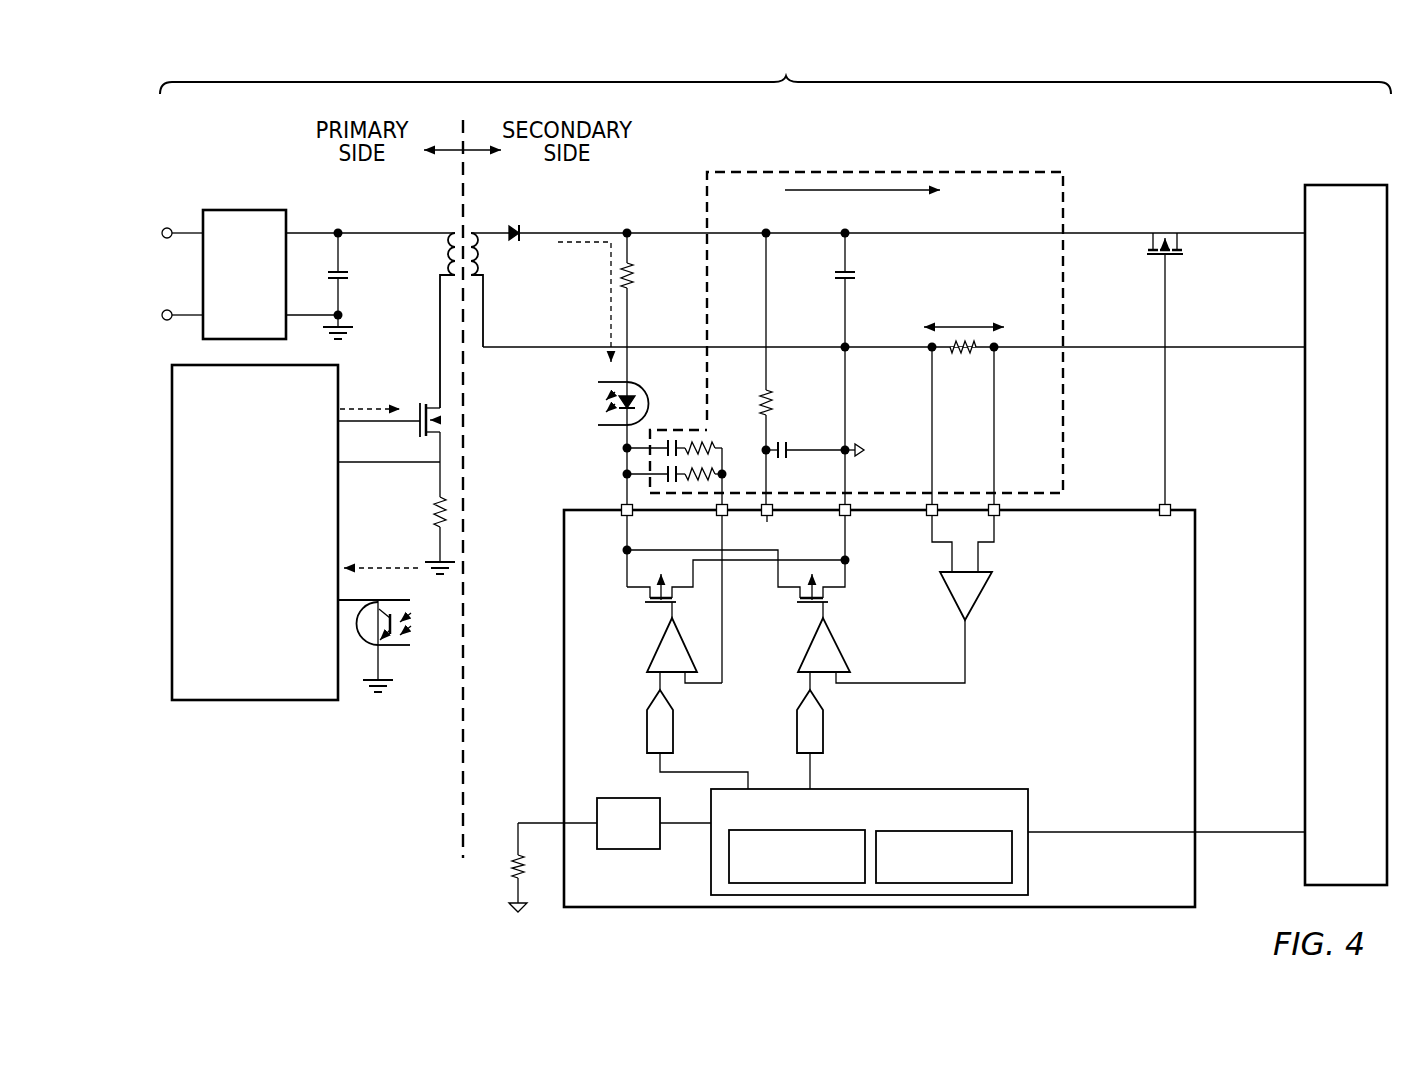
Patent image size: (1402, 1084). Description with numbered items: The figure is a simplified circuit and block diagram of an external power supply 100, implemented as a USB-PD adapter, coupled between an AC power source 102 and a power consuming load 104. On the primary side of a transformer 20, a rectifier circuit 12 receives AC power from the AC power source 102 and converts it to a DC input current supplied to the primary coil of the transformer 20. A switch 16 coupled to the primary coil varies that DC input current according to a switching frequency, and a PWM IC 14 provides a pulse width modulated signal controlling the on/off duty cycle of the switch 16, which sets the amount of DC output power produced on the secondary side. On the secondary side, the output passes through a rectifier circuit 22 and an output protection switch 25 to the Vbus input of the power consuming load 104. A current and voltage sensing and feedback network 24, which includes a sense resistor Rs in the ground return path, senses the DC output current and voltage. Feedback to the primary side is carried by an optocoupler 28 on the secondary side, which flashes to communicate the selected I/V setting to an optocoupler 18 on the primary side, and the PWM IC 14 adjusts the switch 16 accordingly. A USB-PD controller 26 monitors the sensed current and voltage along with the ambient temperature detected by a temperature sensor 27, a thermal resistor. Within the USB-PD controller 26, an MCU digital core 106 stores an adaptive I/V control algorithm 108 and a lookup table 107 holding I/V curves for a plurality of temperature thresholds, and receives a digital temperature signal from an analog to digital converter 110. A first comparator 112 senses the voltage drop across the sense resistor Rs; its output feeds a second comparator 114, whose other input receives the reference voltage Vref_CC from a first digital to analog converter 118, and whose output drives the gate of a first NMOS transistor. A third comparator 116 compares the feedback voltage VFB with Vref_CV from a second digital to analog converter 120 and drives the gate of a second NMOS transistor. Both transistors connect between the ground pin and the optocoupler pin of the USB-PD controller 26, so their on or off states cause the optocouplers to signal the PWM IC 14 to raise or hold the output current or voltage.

The external power supply 100 is at (768, 66).
The AC power source 102 is at (188, 305).
The rectifier circuit 12 is at (231, 310).
The PWM IC 14 is at (235, 536).
The switch 16 is at (418, 394).
The optocoupler 18 is at (411, 701).
The transformer 20 is at (453, 220).
The rectifier circuit 22 is at (523, 217).
The current and voltage sensing and feedback network 24 is at (978, 168).
The output protection switch 25 is at (1170, 217).
The USB-PD controller 26 is at (911, 706).
The temperature sensor 27 is at (504, 868).
The optocoupler 28 is at (549, 443).
The power consuming load 104 is at (1329, 621).
The MCU digital core 106 is at (958, 816).
The lookup table 107 is at (836, 868).
The adaptive I/V control algorithm 108 is at (992, 876).
The analog to digital converter 110 is at (613, 845).
The first comparator 112 is at (978, 606).
The second comparator 114 is at (846, 645).
The third comparator 116 is at (655, 648).
The first digital to analog converter 118 is at (826, 734).
The second digital to analog converter 120 is at (676, 734).